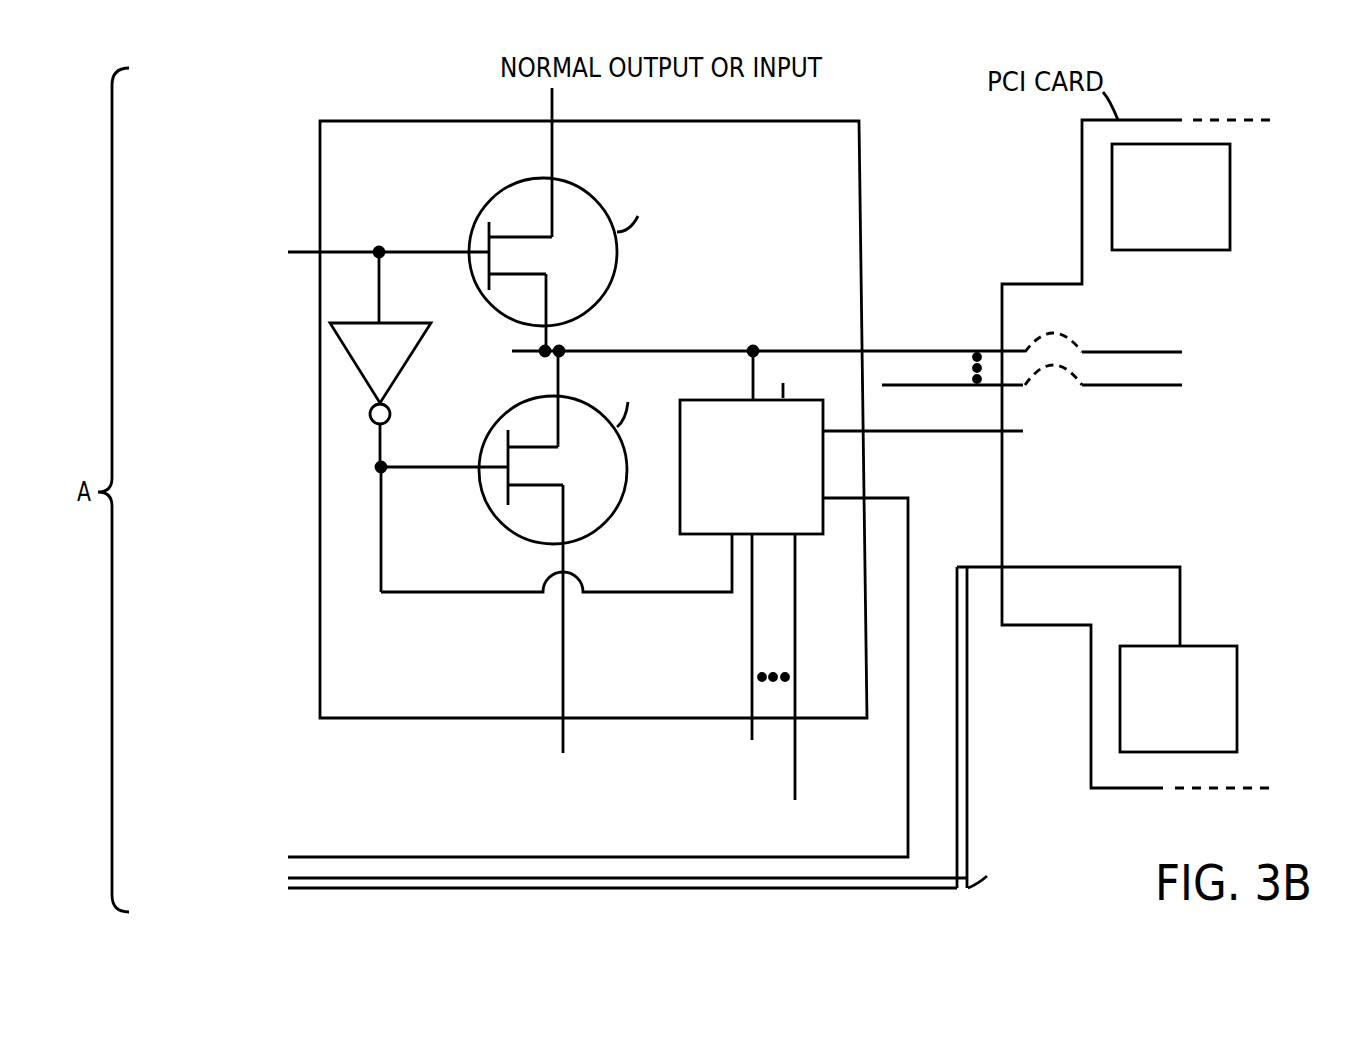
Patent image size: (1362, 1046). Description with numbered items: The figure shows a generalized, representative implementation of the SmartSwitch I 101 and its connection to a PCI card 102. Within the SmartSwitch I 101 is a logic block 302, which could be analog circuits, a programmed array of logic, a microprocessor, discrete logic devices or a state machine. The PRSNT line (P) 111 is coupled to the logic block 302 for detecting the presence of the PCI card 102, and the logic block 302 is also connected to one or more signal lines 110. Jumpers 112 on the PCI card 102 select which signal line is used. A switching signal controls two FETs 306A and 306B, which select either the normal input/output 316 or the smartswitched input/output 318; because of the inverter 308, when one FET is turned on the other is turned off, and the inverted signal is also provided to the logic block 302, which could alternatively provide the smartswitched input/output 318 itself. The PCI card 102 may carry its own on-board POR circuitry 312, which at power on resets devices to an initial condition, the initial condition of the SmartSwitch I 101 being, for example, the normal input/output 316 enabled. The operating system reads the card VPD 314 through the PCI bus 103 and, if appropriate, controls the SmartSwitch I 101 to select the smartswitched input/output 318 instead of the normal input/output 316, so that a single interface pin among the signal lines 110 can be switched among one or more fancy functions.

The SmartSwitch I 101 is at (322, 718).
The PCI card 102 is at (1237, 420).
The PCI bus 103 is at (968, 760).
The signal lines R1–Rn 110 is at (950, 350).
The PRSNT line (P) 111 is at (958, 433).
The jumpers 112 is at (1058, 337).
The logic block 302 is at (825, 537).
The FET 306A is at (612, 320).
The FET 306B is at (582, 542).
The inverter 308 is at (408, 367).
The on-board POR circuitry 312 is at (1183, 250).
The card VPD 314 is at (1202, 642).
The normal input/output 316 is at (552, 104).
The smartswitched input/output 318 is at (566, 730).